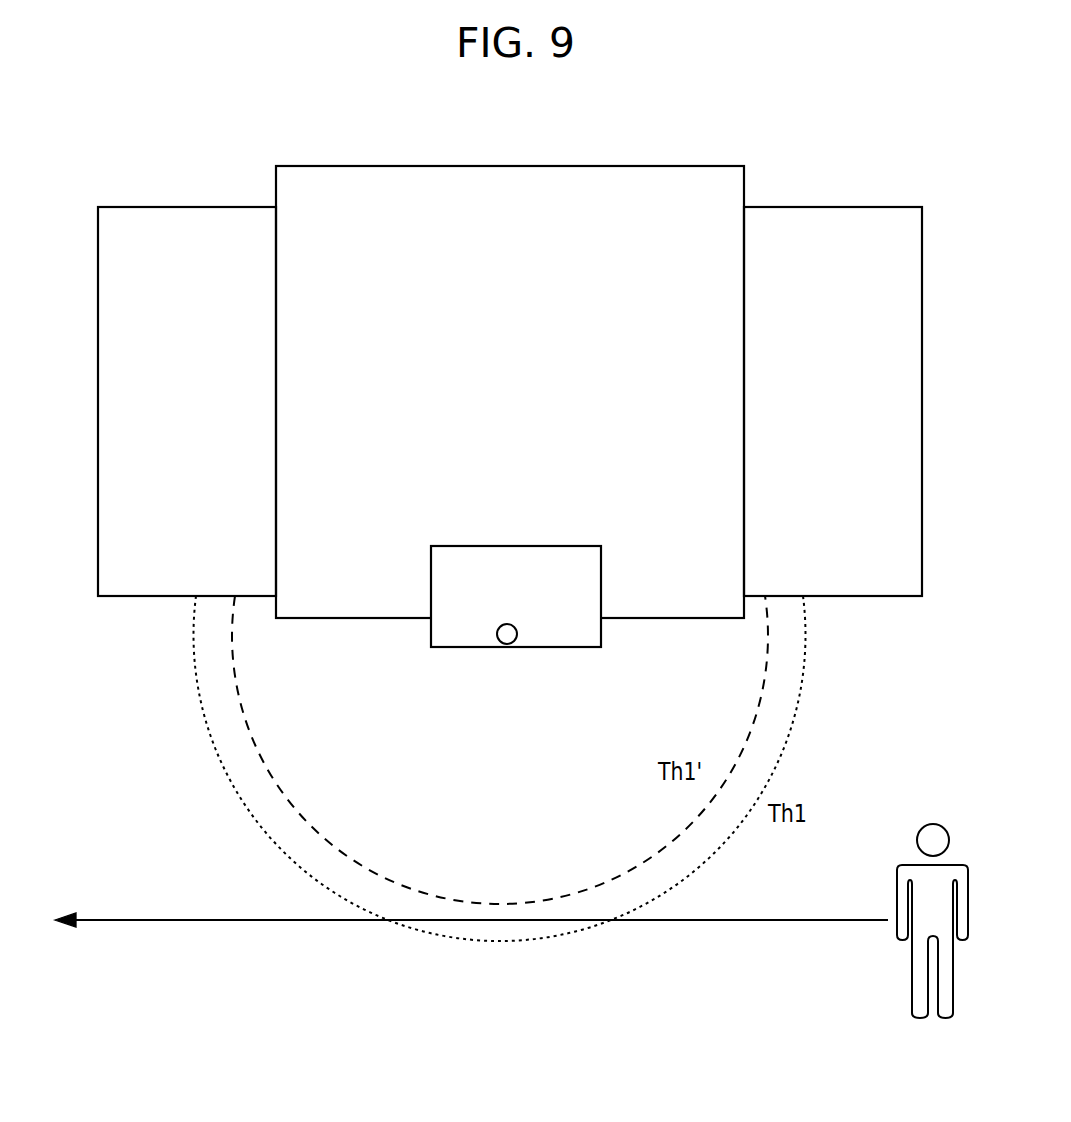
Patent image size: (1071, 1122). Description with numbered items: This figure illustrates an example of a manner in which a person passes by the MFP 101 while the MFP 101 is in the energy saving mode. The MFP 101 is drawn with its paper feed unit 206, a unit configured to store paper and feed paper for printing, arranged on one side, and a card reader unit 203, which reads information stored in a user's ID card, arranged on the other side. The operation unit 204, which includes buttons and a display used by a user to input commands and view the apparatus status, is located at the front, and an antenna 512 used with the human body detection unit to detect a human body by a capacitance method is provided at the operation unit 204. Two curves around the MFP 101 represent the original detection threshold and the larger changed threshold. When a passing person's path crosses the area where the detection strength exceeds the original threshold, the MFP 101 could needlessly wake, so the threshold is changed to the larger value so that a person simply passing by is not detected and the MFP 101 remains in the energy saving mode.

The MFP 101 is at (662, 165).
The card reader unit 203 is at (157, 207).
The paper feed unit 206 is at (852, 207).
The operation unit 204 is at (603, 633).
The antenna 512 is at (507, 644).